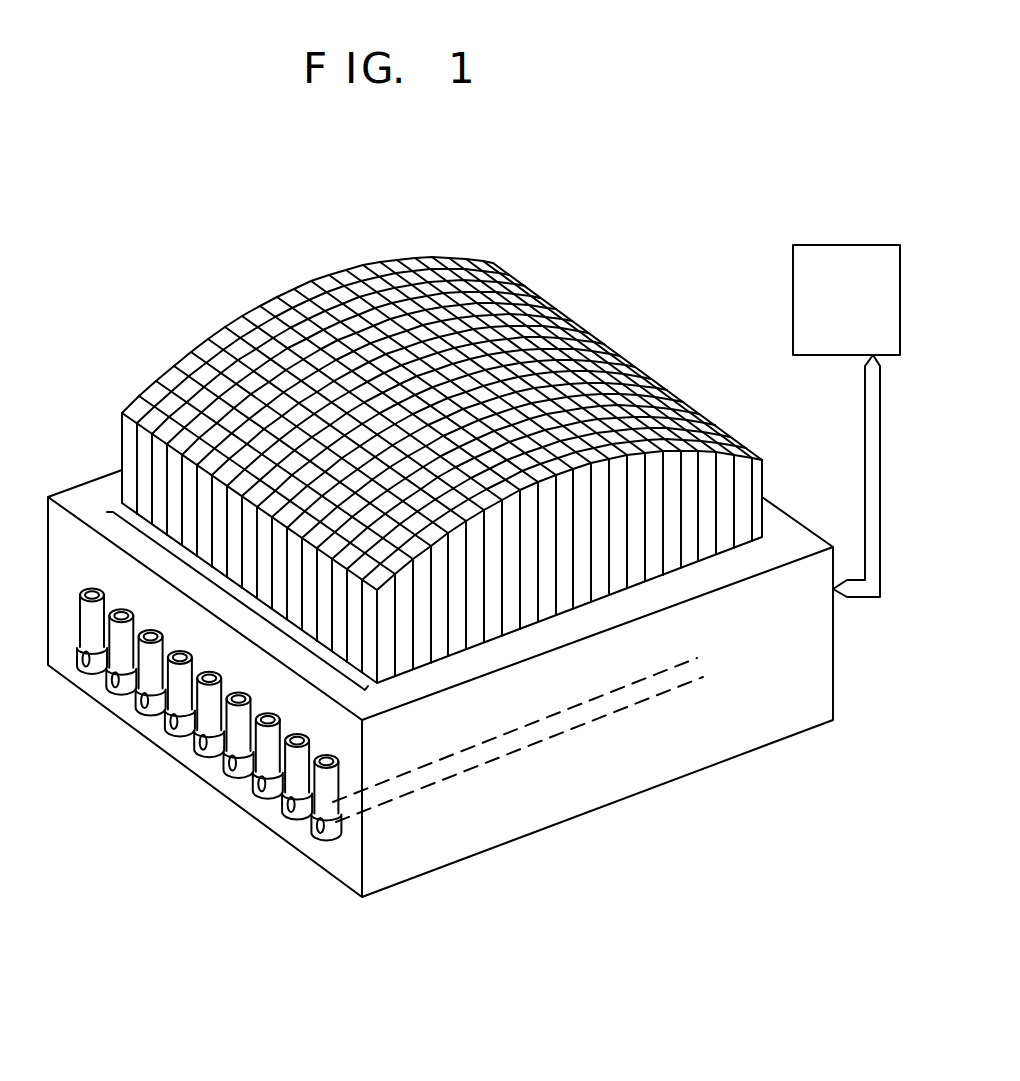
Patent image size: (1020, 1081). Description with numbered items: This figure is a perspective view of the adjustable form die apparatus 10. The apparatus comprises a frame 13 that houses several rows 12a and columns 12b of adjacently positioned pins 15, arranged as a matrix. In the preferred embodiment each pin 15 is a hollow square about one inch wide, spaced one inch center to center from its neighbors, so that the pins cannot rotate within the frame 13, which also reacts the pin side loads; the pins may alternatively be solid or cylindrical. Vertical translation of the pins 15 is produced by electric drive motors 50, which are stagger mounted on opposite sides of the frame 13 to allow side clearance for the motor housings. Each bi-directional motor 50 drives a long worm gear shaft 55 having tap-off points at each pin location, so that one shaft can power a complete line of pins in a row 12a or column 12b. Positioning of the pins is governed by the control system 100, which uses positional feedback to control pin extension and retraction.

The form die apparatus 10 is at (594, 282).
The rows 12a is at (208, 592).
The columns 12b is at (425, 205).
The frame 13 is at (822, 657).
The pins 15 is at (130, 437).
The electric drive motors 50 is at (77, 622).
The worm gear shaft 55 is at (528, 742).
The control system 100 is at (821, 313).